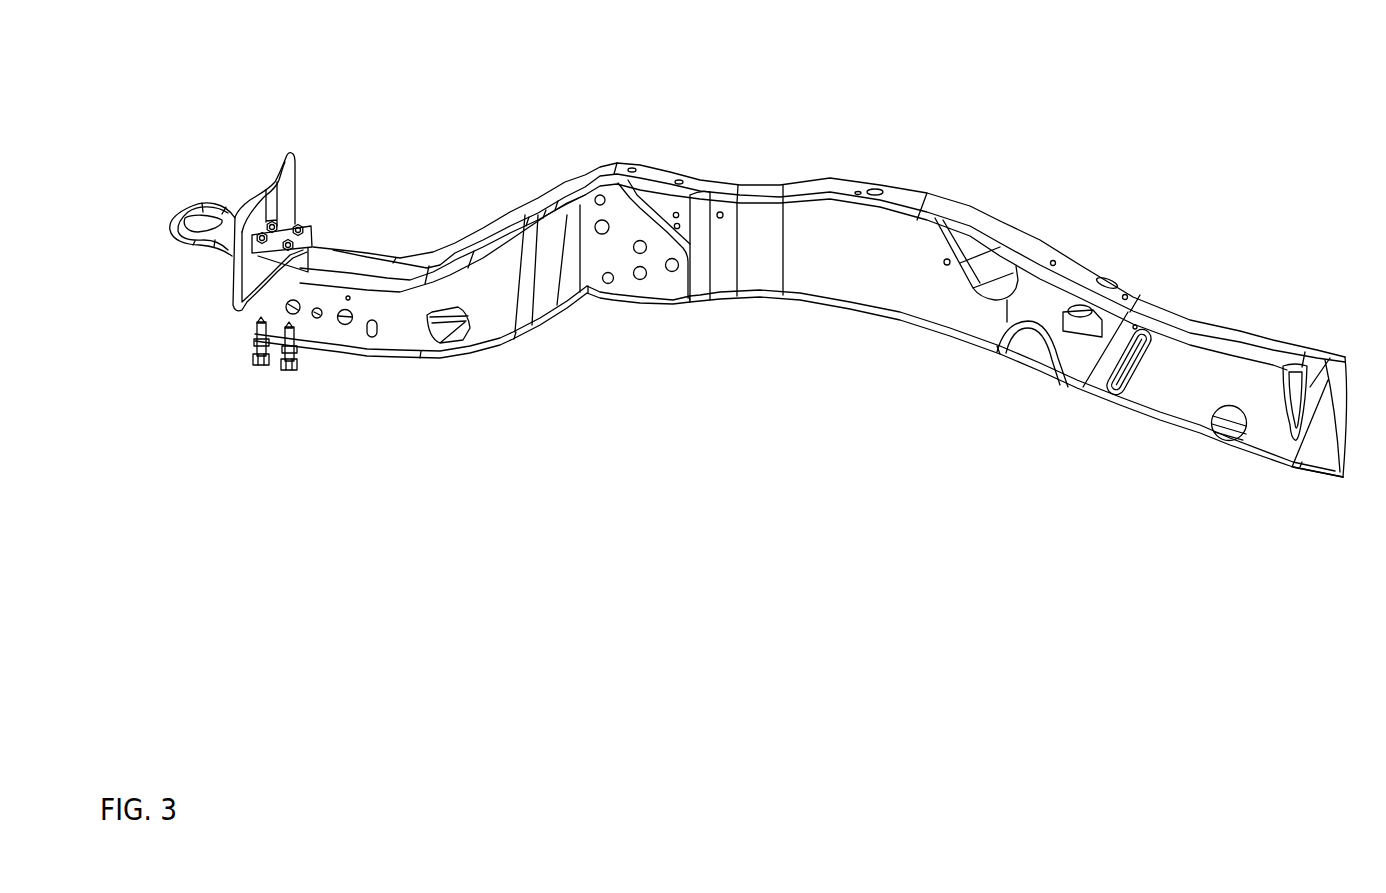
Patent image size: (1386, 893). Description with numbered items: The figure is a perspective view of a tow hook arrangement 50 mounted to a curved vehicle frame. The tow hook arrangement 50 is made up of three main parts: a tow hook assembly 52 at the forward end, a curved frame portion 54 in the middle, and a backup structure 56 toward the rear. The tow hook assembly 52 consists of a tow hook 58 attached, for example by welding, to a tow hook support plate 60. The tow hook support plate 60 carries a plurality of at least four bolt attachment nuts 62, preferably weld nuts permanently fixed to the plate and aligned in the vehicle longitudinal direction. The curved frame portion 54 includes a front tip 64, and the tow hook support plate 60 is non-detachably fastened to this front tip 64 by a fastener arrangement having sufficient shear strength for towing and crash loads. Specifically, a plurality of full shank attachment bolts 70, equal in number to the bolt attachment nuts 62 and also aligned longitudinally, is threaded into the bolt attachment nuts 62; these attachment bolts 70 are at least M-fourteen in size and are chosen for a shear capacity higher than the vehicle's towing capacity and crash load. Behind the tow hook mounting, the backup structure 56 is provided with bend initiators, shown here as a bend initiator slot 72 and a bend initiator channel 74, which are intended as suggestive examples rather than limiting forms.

The tow hook arrangement 50 is at (1140, 106).
The tow hook assembly 52 is at (189, 119).
The curved frame portion 54 is at (983, 172).
The backup structure 56 is at (1307, 495).
The tow hook 58 is at (172, 230).
The tow hook support plate 60 is at (290, 181).
The bolt attachment nuts 62 is at (296, 228).
The front tip 64 is at (343, 334).
The full shank attachment bolts 70 is at (253, 358).
The bend initiator slot 72 is at (1143, 343).
The bend initiator channel 74 is at (1297, 380).